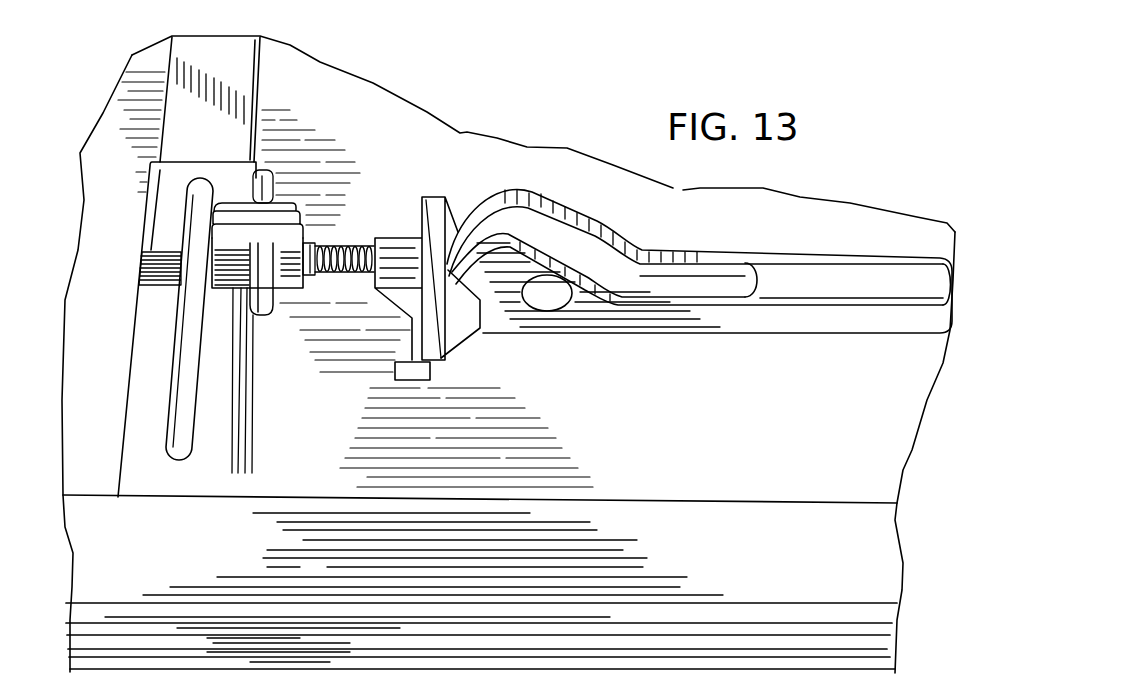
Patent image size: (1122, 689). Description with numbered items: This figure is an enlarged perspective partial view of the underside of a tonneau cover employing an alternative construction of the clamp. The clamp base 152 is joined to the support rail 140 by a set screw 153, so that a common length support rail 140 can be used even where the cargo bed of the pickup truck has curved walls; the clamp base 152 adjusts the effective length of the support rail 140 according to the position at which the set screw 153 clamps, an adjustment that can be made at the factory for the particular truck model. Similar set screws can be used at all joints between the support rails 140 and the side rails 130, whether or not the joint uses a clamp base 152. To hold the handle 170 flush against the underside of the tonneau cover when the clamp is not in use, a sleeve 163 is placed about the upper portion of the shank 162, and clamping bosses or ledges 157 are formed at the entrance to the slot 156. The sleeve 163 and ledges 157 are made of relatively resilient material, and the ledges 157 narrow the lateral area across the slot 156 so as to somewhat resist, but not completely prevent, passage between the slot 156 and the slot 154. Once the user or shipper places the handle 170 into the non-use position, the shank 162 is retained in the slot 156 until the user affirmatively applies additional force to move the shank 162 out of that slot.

The side rail 130 is at (637, 507).
The support rail 140 is at (248, 82).
The clamp base 152 is at (146, 354).
The set screw 153 is at (274, 187).
The slot 154 is at (190, 425).
The slot 156 is at (300, 227).
The clamping bosses or ledges 157 is at (290, 213).
The shank 162 is at (357, 274).
The sleeve 163 is at (422, 216).
The handle 170 is at (708, 256).